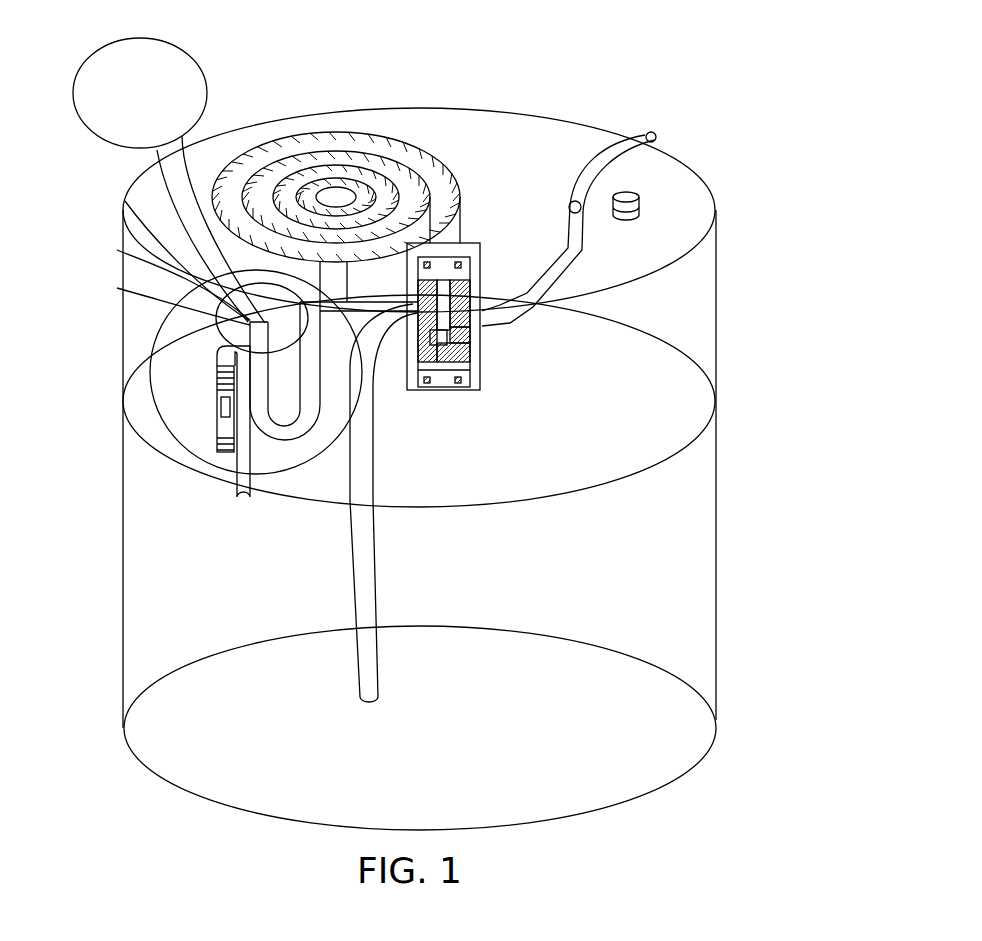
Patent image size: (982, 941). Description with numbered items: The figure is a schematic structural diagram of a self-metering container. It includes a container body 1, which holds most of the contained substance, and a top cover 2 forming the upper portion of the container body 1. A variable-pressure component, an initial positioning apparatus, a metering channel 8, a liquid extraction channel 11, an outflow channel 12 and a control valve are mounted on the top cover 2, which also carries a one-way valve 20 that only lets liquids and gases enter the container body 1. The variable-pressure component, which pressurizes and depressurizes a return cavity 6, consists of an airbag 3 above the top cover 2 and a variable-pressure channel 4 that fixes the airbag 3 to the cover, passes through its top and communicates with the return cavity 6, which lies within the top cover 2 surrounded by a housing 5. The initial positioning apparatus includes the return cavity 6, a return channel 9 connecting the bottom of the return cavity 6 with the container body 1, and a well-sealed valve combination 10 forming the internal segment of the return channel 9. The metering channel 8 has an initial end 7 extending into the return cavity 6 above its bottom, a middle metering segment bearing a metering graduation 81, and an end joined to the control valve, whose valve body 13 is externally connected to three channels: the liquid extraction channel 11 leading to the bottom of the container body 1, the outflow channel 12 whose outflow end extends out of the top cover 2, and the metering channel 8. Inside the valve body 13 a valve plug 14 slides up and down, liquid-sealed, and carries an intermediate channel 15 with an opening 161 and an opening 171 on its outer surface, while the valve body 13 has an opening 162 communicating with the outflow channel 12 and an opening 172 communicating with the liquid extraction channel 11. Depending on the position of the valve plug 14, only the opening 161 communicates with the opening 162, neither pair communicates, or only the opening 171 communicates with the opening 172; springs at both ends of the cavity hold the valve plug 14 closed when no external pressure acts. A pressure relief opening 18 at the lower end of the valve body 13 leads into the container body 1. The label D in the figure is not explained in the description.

The container body 1 is at (685, 577).
The top cover 2 is at (693, 320).
The airbag 3 is at (193, 85).
The variable-pressure channel 4 is at (177, 183).
The housing 5 is at (117, 250).
The return cavity 6 is at (117, 288).
The initial end 7 is at (125, 201).
The metering channel 8 is at (260, 402).
The return channel 9 is at (245, 497).
The valve combination 10 is at (217, 400).
The liquid extraction channel 11 is at (363, 593).
The outflow channel 12 is at (568, 223).
The valve body 13 is at (468, 253).
The valve plug 14 is at (463, 353).
The intermediate channel 15 is at (458, 277).
The pressure relief opening 18 is at (443, 392).
The one-way valve 20 is at (633, 188).
The metering graduation 81 is at (387, 143).
The opening 161 is at (540, 282).
The opening 162 is at (473, 327).
The opening 171 is at (421, 391).
The opening 172 is at (417, 302).
The dish D is at (173, 427).